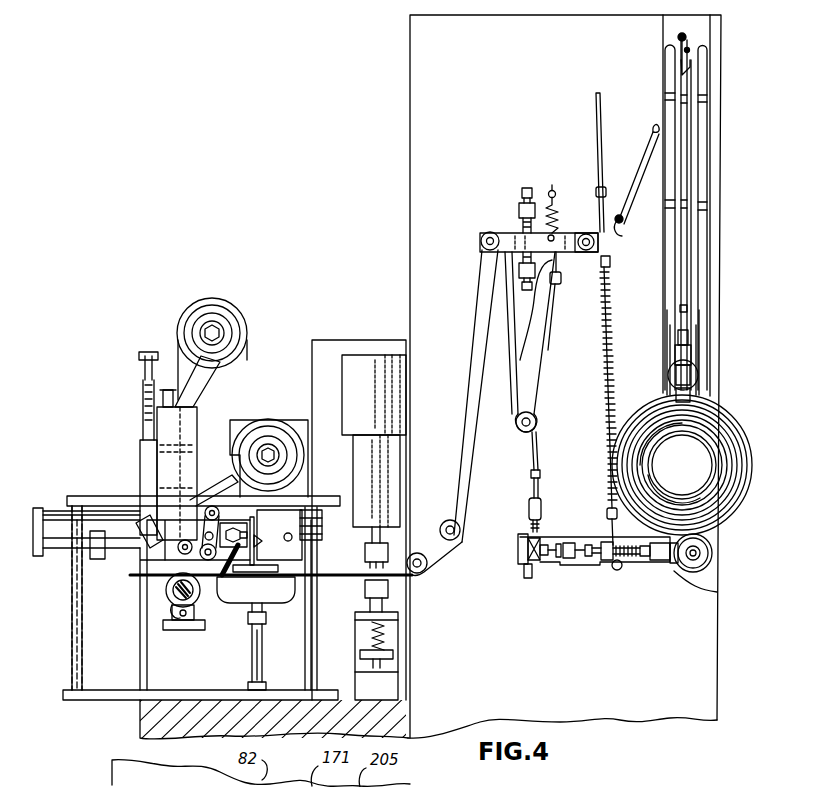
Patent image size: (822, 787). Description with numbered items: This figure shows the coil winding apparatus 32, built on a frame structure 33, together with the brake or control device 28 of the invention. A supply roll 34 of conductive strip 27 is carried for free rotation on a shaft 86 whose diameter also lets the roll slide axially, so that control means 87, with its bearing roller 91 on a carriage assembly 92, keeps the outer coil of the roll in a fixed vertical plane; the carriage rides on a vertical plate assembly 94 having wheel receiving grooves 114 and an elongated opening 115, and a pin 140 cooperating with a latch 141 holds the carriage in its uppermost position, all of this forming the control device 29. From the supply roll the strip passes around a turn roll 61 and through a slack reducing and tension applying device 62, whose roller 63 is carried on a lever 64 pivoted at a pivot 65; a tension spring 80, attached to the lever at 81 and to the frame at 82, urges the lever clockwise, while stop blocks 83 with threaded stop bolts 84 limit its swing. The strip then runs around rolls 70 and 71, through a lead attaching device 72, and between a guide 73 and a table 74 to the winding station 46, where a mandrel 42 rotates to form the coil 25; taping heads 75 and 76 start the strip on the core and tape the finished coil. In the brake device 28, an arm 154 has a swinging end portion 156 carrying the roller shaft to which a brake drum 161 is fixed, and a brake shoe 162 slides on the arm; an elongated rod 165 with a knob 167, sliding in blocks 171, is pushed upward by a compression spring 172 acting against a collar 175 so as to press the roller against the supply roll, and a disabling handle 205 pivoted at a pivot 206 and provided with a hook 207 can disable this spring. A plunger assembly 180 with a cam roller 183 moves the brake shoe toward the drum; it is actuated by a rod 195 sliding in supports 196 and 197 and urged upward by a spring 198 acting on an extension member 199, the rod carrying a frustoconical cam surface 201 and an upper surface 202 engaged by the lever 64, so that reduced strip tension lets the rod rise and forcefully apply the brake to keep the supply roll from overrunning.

The strip conductor coil construction 25 is at (197, 608).
The strip 27 is at (469, 454).
The control device 28 is at (597, 600).
The control device 29 is at (720, 334).
The coil winding apparatus 32 is at (86, 468).
The frame structure 33 is at (705, 647).
The supply roll 34 is at (745, 465).
The mandrel 42 is at (172, 608).
The winding station 46 is at (151, 595).
The turn roll 61 is at (532, 412).
The slack reducing and tension applying device 62 is at (472, 240).
The roller 63 is at (478, 262).
The lever 64 is at (561, 282).
The pivot means 65 is at (587, 232).
The roll 70 is at (445, 521).
The roll 71 is at (420, 554).
The lead attaching device 72 is at (358, 590).
The combination guide means and bearing surface means 73 is at (258, 558).
The table 74 is at (280, 592).
The taping head means 75 is at (283, 513).
The taping head means 76 is at (160, 481).
The tension spring 80 is at (555, 204).
The spring attachment point on lever 81 is at (554, 235).
The spring attachment point on frame 82 is at (553, 190).
The block 83 is at (519, 210).
The threaded stop bolt 84 is at (520, 190).
The shaft 86 is at (698, 450).
The control means 87 is at (707, 405).
The bearing roller 91 is at (698, 378).
The carriage assembly 92 is at (701, 342).
The plate assembly 94 is at (698, 135).
The wheel receiving groove means 114 is at (665, 80).
The elongated opening 115 is at (692, 186).
The pin 140 is at (690, 308).
The latch 141 is at (682, 58).
The arm 154 is at (579, 562).
The swinging end portion 156 is at (679, 586).
The brake drum 161 is at (712, 549).
The brake shoe 162 is at (702, 588).
The elongated rod 165 is at (596, 126).
The knob 167 is at (617, 571).
The block 171 is at (598, 186).
The compression spring 172 is at (611, 349).
The collar 175 is at (611, 261).
The plunger assembly 180 is at (598, 538).
The cam roller 183 is at (538, 566).
The rod 195 is at (552, 350).
The support 196 is at (557, 298).
The support 197 is at (518, 548).
The spring 198 is at (525, 530).
The extension member 199 is at (524, 460).
The cam surface 201 is at (518, 558).
The upper surface 202 is at (536, 310).
The disabling handle 205 is at (652, 146).
The pivot 206 is at (635, 231).
The hook 207 is at (655, 126).